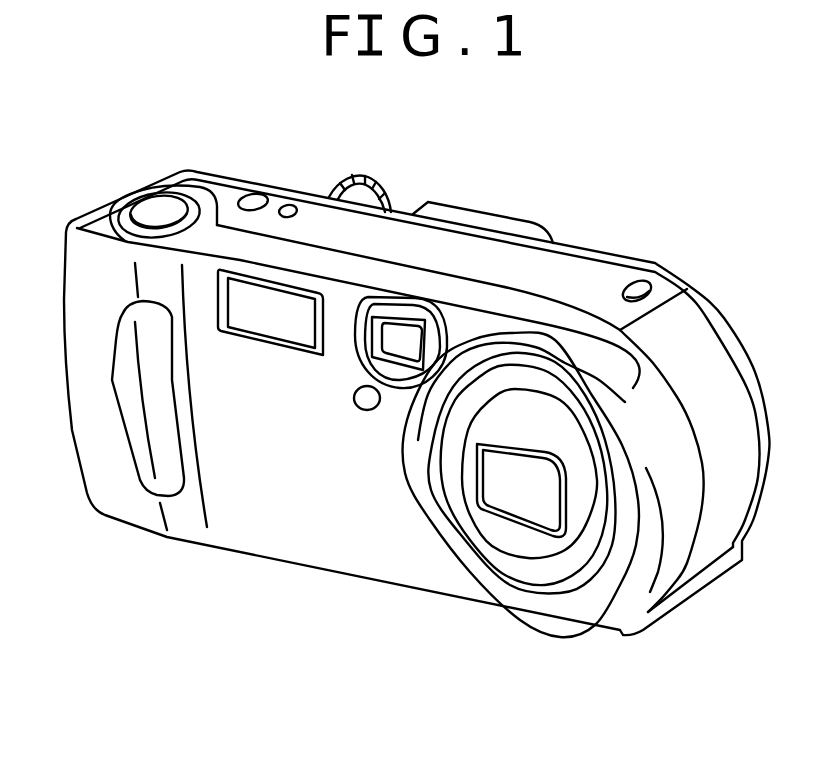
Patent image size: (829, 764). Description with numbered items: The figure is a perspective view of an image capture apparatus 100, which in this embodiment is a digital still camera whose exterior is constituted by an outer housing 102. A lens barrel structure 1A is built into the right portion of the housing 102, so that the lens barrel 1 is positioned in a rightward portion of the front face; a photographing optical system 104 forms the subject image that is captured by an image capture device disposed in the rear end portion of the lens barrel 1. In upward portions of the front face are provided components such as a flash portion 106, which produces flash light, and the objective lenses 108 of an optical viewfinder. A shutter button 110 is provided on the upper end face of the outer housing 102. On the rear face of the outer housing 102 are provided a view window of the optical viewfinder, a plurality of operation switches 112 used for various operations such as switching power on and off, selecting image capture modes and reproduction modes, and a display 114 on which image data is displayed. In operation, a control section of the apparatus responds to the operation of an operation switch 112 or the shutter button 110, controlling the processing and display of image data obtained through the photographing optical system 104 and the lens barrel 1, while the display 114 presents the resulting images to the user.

The image capture apparatus 100 is at (628, 186).
The outer housing 102 is at (102, 206).
The photographing optical system 104 is at (500, 490).
The flash portion 106 is at (270, 320).
The objective lenses 108 is at (373, 355).
The shutter button 110 is at (156, 212).
The operation switches 112 is at (358, 177).
The display 114 is at (493, 214).
The lens barrel 1 is at (521, 473).
The lens barrel structure 1A is at (524, 475).